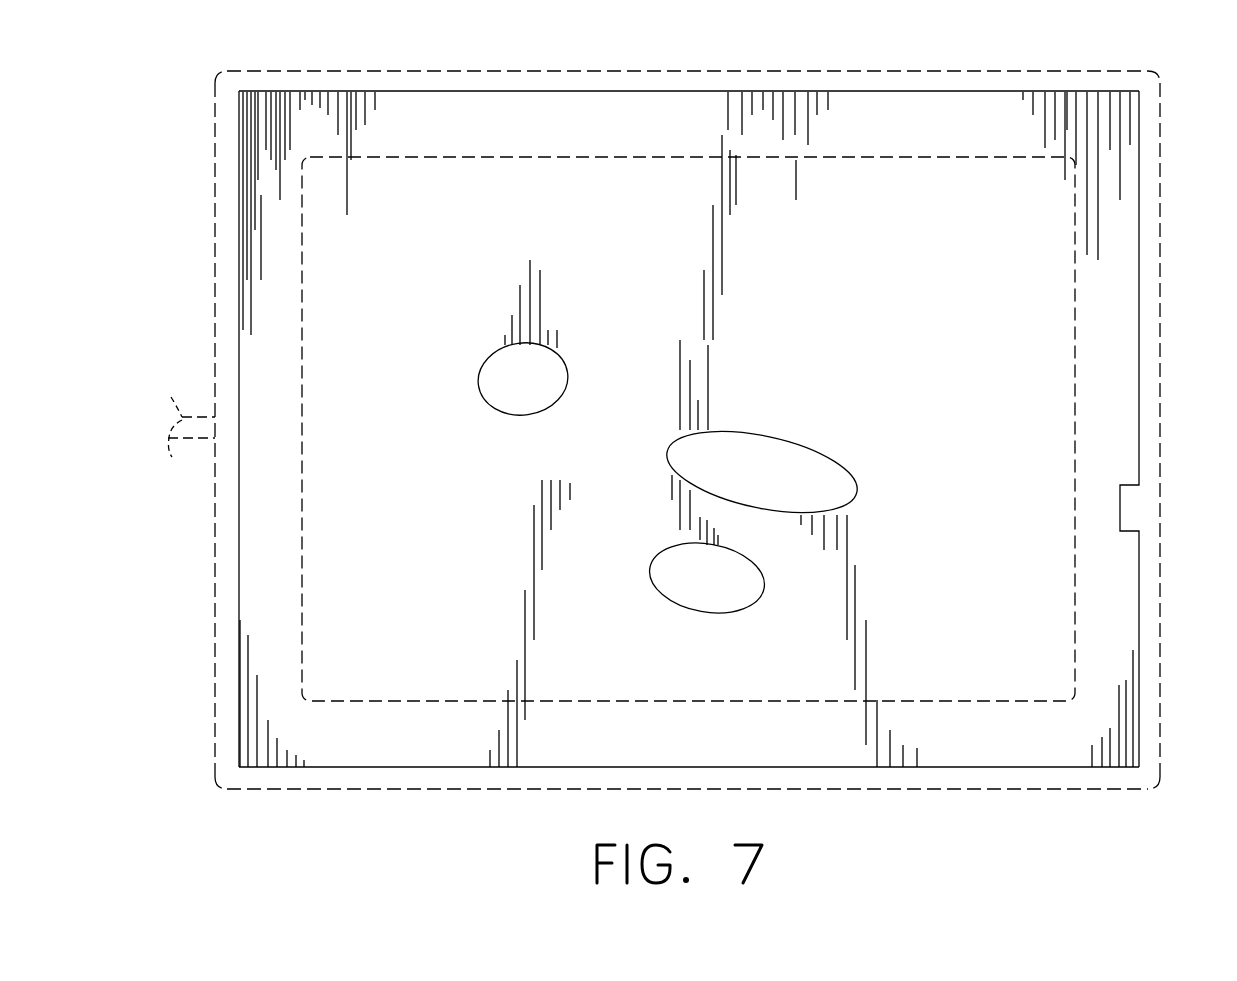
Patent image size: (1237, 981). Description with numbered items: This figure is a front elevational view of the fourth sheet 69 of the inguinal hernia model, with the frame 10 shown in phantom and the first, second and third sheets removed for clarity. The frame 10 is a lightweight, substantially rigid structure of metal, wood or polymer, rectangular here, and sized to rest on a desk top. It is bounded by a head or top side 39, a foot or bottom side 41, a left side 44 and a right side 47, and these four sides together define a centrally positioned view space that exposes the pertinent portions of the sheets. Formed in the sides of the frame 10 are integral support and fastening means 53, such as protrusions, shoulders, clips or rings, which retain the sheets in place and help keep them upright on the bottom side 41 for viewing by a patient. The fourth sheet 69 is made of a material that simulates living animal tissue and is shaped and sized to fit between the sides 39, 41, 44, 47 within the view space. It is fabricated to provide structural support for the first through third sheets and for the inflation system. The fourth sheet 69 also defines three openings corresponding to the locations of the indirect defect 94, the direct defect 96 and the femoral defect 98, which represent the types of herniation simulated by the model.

The frame 10 is at (691, 430).
The head or top side 39 is at (582, 75).
The foot or bottom side 41 is at (877, 780).
The left side 44 is at (1155, 277).
The right side 47 is at (215, 265).
The integral support and fastening means 53 is at (1133, 530).
The fourth sheet 69 is at (396, 637).
The indirect defect 94 is at (515, 348).
The direct defect 96 is at (745, 437).
The femoral defect 98 is at (722, 612).